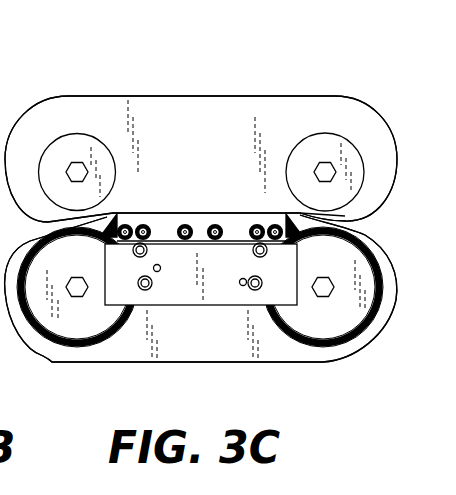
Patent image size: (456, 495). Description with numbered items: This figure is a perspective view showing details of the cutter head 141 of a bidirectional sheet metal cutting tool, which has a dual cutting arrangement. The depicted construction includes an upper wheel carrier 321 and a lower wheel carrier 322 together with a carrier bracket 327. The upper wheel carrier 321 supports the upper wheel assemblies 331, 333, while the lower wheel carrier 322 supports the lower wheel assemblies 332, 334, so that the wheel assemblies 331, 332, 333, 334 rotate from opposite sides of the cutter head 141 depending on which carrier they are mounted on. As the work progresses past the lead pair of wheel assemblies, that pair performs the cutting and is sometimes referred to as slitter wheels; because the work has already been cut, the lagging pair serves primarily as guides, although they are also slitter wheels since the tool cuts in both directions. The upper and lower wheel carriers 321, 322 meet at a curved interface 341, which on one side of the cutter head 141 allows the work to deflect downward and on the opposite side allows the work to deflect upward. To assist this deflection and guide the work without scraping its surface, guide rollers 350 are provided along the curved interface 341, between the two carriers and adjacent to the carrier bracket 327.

The cutter head 141 is at (312, 54).
The upper wheel carrier 321 is at (215, 110).
The lower wheel carrier 322 is at (227, 363).
The carrier bracket 327 is at (196, 298).
The upper wheel assembly 331 is at (328, 143).
The lower wheel assembly 332 is at (330, 325).
The upper wheel assembly 333 is at (75, 145).
The lower wheel assembly 334 is at (43, 354).
The curved interface 341 is at (163, 223).
The guide rollers 350 is at (143, 225).